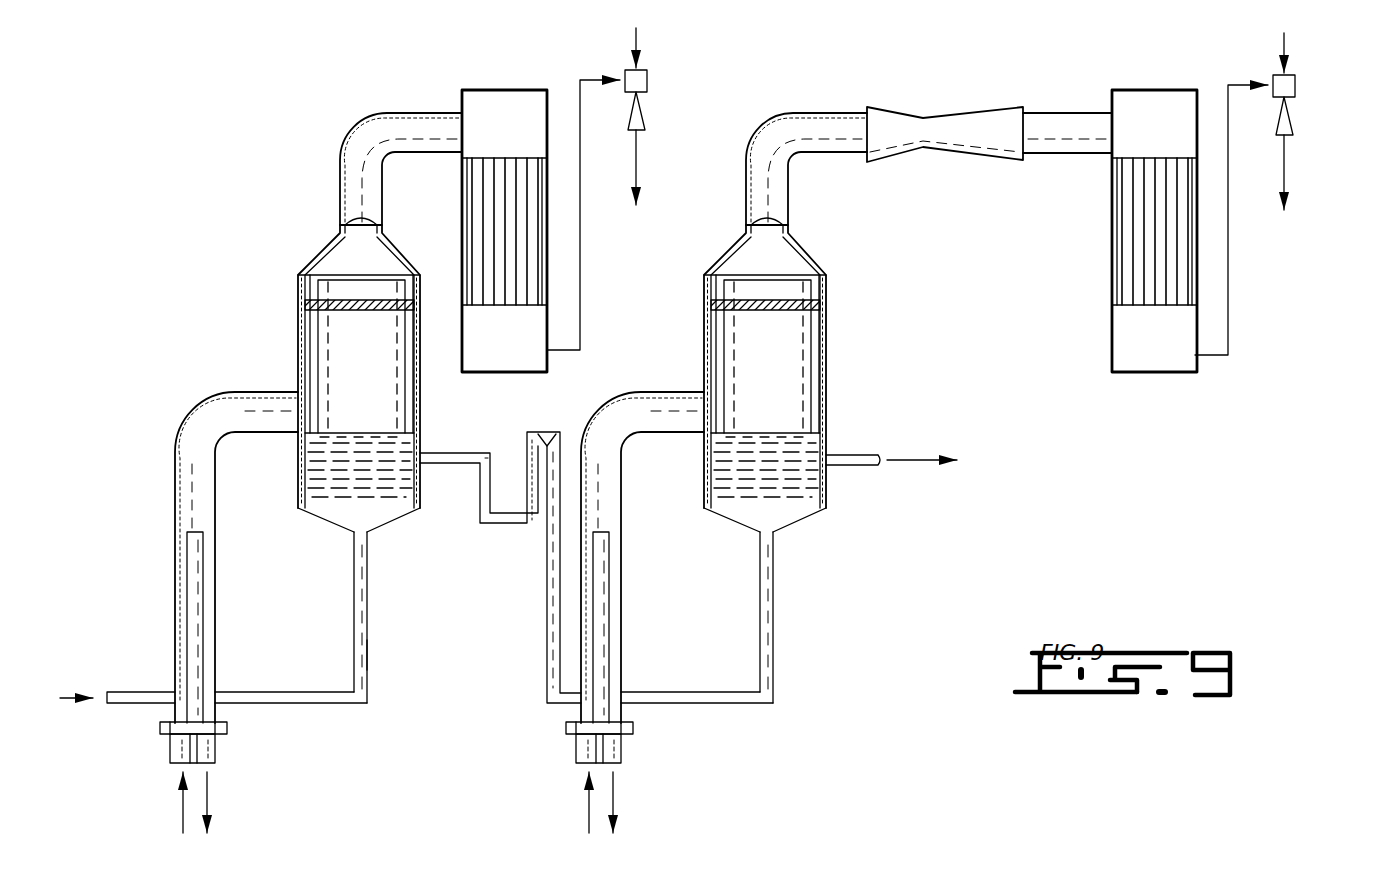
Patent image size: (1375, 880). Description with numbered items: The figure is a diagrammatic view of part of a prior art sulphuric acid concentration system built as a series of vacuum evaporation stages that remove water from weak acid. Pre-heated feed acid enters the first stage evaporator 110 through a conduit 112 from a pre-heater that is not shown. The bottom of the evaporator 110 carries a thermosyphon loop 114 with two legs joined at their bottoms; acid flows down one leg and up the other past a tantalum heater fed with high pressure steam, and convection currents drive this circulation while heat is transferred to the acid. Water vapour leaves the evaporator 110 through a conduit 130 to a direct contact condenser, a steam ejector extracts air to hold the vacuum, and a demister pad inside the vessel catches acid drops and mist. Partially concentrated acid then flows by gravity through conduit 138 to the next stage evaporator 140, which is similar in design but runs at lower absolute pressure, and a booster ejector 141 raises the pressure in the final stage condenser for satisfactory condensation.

The first stage evaporator 110 is at (298, 340).
The conduit 112 is at (123, 695).
The thermosyphon loop 114 is at (372, 655).
The conduit 130 is at (365, 138).
The conduit 138 is at (532, 435).
The next stage evaporator 140 is at (828, 390).
The booster ejector 141 is at (932, 112).